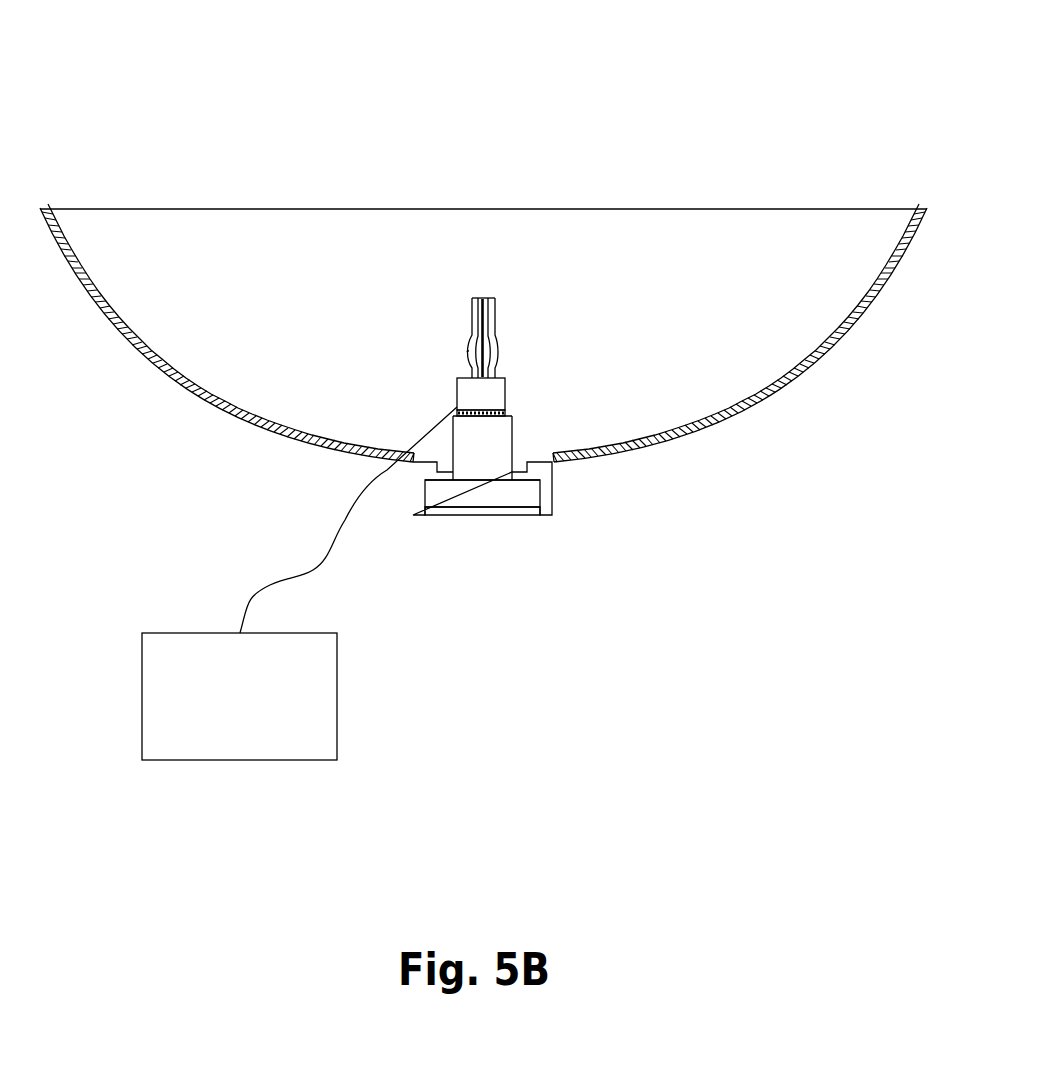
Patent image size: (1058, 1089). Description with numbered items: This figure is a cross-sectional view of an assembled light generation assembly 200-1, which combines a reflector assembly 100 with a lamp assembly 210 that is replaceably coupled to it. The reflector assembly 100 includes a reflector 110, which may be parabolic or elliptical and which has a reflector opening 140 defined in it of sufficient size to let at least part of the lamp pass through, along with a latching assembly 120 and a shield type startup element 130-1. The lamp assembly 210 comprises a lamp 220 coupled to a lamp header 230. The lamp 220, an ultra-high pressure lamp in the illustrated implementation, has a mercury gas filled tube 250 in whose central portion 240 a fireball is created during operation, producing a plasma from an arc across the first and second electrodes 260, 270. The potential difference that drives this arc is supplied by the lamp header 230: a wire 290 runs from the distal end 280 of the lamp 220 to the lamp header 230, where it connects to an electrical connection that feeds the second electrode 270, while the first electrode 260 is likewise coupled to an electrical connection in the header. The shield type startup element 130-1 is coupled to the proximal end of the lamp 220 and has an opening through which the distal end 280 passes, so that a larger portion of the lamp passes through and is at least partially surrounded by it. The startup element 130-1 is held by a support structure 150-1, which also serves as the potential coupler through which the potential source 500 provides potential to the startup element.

The reflector assembly 100 is at (155, 152).
The reflector 110 is at (190, 398).
The latching assembly 120 is at (552, 515).
The shield type startup element 130-1 is at (490, 298).
The reflector opening 140 is at (467, 522).
The support structure 150-1 is at (453, 420).
The light generation assembly 200-1 is at (513, 57).
The lamp assembly 210 is at (608, 353).
The lamp 220 is at (455, 340).
The lamp header 230 is at (500, 503).
The central portion 240 is at (467, 348).
The mercury gas filled tube 250 is at (458, 385).
The first electrode 260 is at (500, 415).
The second electrode 270 is at (483, 298).
The distal end 280 is at (472, 300).
The wire 290 is at (495, 370).
The potential source 500 is at (258, 734).